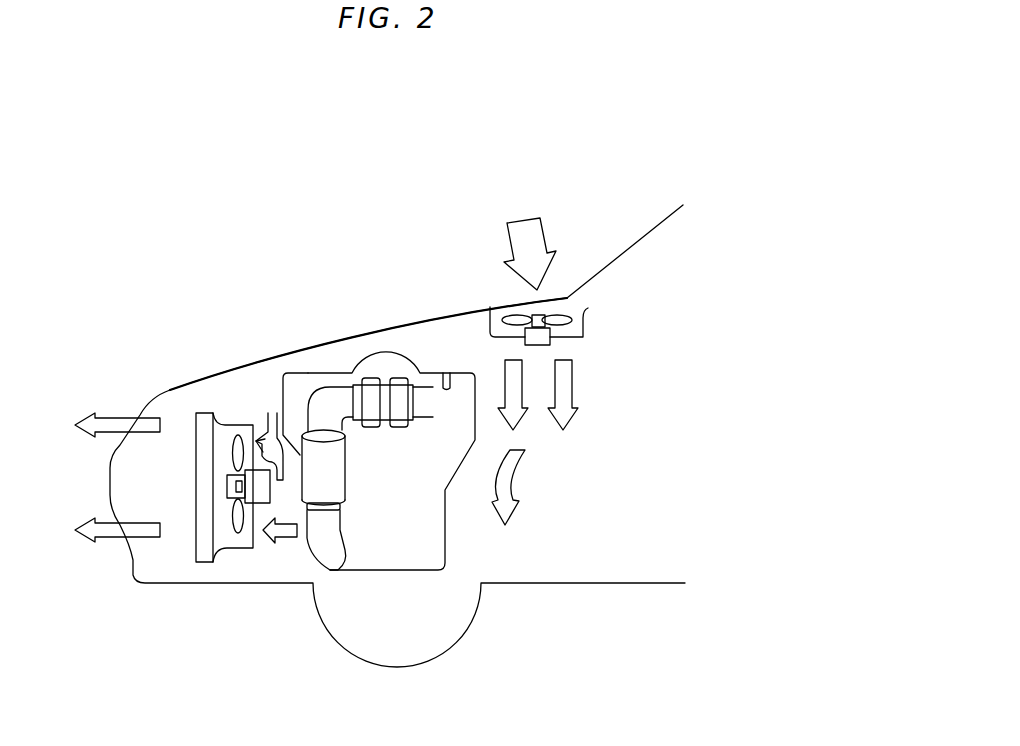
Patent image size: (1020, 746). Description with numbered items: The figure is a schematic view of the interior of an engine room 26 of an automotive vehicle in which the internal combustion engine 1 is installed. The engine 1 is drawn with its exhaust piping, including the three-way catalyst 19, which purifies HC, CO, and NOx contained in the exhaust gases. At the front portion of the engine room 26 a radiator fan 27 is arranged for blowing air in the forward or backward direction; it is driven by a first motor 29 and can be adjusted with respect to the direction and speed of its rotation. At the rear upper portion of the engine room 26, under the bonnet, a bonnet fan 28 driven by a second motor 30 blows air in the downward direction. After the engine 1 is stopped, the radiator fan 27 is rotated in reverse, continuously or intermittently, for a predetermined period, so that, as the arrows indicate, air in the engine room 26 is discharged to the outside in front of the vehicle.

The internal combustion engine 1 is at (308, 373).
The three-way catalyst 19 is at (337, 462).
The engine room 26 is at (432, 327).
The radiator fan 27 is at (242, 528).
The bonnet fan 28 is at (563, 323).
The first motor 29 is at (260, 493).
The second motor 30 is at (540, 337).